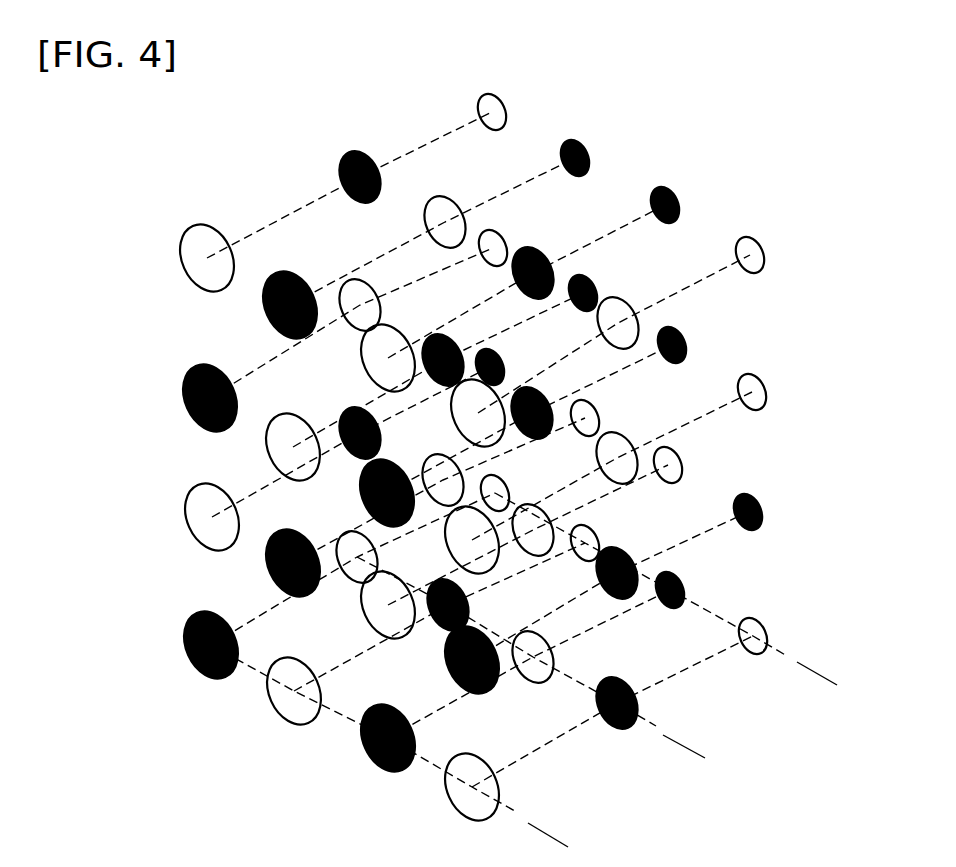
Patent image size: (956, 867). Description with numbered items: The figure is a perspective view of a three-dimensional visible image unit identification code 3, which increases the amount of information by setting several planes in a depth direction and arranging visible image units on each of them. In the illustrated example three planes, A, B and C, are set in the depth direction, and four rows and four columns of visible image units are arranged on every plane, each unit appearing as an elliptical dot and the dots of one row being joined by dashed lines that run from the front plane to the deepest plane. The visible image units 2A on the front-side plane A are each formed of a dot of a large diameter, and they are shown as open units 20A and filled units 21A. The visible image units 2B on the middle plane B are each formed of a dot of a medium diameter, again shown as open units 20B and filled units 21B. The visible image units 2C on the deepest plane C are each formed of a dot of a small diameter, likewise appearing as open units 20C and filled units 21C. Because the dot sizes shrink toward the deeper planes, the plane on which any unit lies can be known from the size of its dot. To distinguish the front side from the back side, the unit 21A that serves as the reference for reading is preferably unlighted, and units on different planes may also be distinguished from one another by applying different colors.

The visible image unit on plane A 2A is at (308, 538).
The visible image unit on plane B 2B is at (499, 418).
The visible image unit on plane C 2C is at (683, 372).
The lighted visible image unit on plane A 20A is at (267, 707).
The unlighted visible image unit on plane A 21A is at (267, 563).
The lighted visible image unit on plane B 20B is at (445, 196).
The unlighted visible image unit on plane B 21B is at (342, 170).
The lighted visible image unit on plane C 20C is at (597, 533).
The unlighted visible image unit on plane C 21C is at (750, 530).
The visible image unit identification code 3 is at (827, 278).